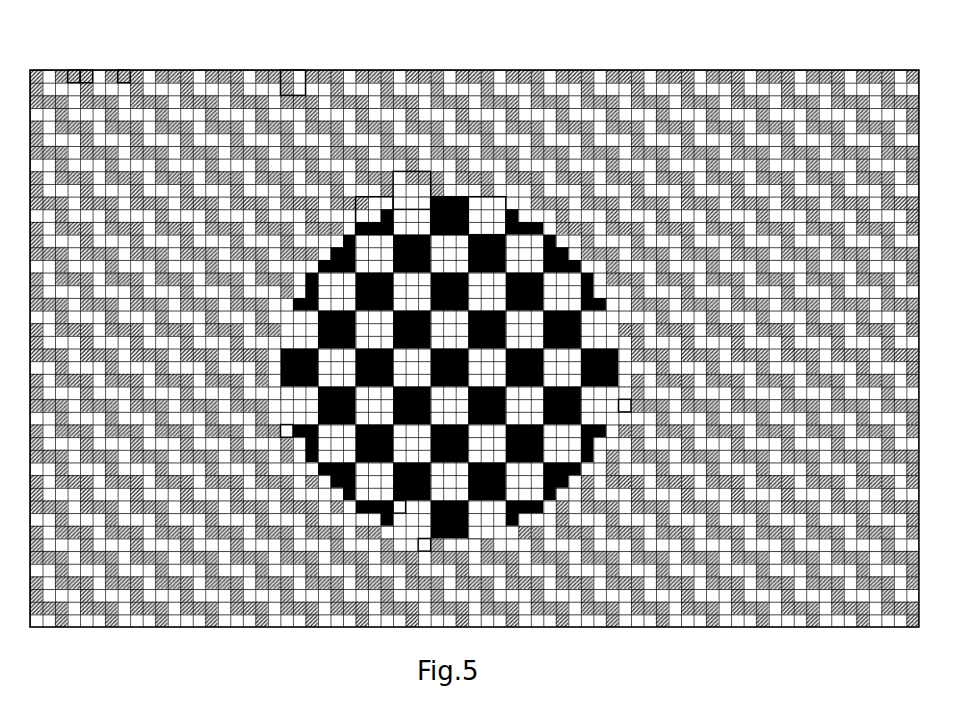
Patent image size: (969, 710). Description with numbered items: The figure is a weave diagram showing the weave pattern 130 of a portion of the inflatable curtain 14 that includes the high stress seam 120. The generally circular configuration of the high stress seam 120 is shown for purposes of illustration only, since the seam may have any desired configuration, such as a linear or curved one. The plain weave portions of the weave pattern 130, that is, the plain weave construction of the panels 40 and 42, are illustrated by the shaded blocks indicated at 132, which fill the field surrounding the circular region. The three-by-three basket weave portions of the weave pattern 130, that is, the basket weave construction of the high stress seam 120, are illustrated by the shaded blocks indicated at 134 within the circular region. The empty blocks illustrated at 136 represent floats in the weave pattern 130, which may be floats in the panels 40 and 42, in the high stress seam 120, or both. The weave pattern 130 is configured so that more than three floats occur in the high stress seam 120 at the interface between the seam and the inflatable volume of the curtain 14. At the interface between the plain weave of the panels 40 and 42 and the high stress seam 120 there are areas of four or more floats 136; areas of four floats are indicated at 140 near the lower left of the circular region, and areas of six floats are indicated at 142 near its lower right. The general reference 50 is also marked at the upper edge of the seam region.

The inflatable curtain 14 is at (628, 60).
The panel 40 is at (73, 70).
The panel 42 is at (73, 70).
The shaded blocks of plain weave portions 132 is at (127, 71).
The weave pattern 130 is at (285, 61).
The circular display region 50 is at (366, 196).
The high stress seam 120 is at (410, 185).
The shaded blocks of basket weave portions 134 is at (455, 192).
The floats 136 is at (485, 215).
The areas of four floats 140 is at (290, 432).
The areas of six floats 142 is at (628, 405).